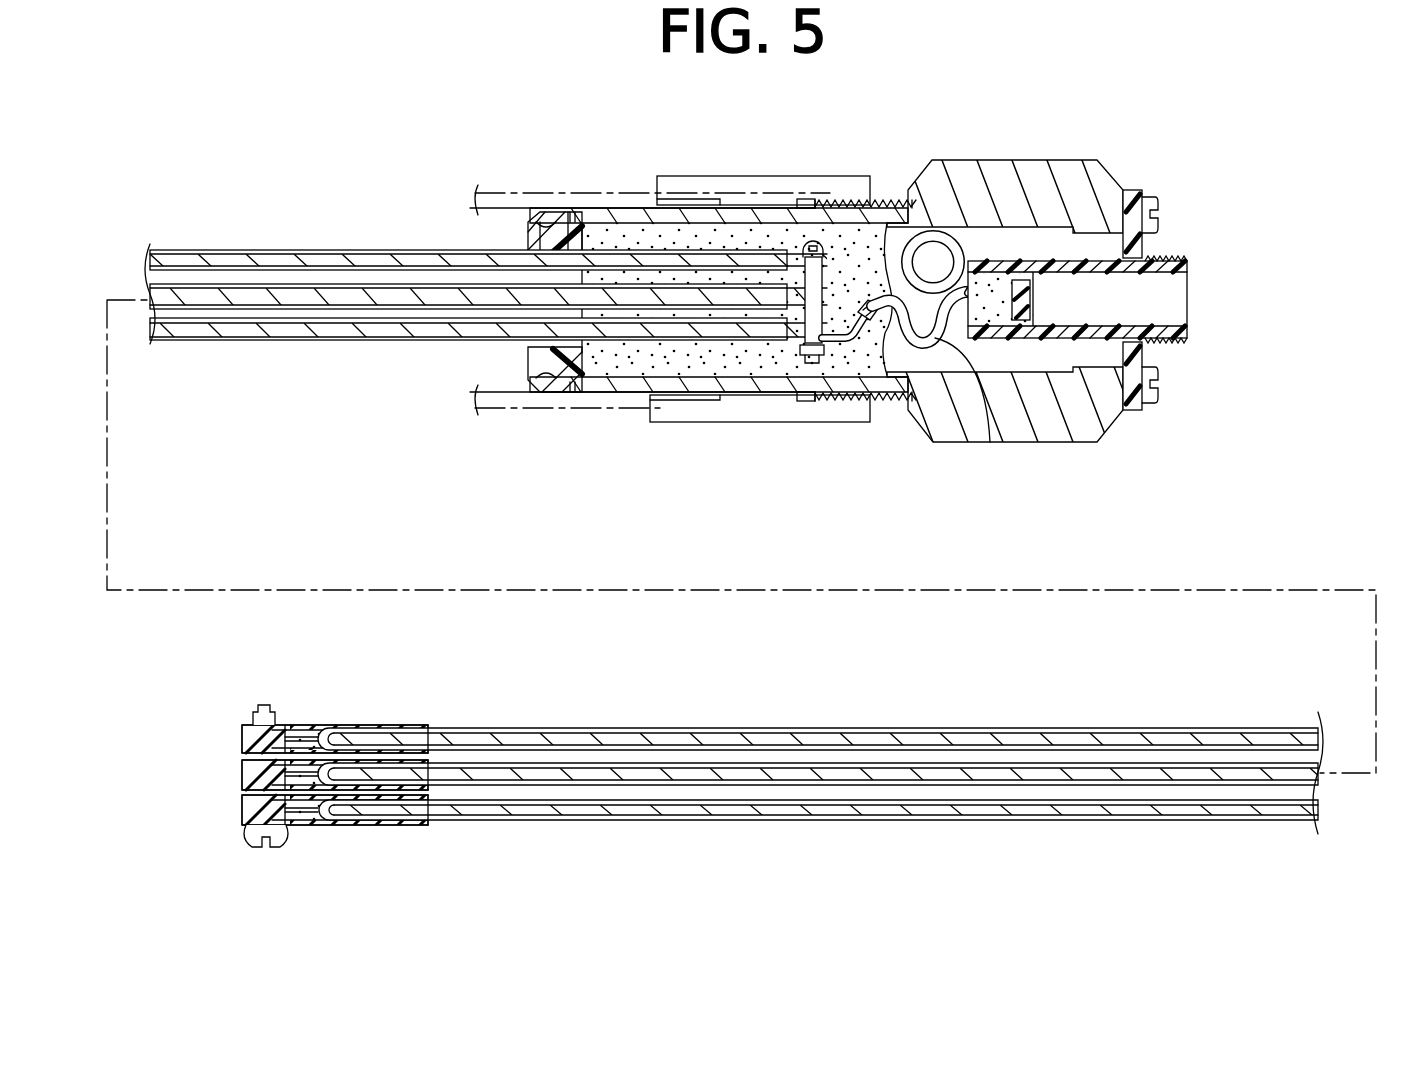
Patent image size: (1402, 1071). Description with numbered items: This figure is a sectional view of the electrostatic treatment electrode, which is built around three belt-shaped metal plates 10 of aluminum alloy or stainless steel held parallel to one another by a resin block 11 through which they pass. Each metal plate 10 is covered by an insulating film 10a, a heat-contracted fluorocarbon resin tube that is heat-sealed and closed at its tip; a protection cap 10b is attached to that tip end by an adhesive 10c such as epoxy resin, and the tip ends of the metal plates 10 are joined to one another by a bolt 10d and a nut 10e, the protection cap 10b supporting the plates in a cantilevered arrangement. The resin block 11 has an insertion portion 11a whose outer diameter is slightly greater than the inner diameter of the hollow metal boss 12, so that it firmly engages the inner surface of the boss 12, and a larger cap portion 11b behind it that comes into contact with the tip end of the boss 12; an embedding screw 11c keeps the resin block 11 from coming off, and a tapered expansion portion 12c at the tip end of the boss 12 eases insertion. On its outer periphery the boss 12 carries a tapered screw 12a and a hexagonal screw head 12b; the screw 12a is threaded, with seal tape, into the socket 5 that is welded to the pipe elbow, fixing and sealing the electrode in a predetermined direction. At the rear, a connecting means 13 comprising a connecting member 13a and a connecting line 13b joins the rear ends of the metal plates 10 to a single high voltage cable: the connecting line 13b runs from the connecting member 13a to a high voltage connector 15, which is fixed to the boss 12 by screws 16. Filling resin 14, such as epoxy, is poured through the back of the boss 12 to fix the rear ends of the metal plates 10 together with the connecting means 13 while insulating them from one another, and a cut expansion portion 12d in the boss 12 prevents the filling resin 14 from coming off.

The socket 5 is at (603, 406).
The belt-shaped metal plate 10 is at (234, 283).
The insulating film 10a is at (301, 725).
The protection cap 10b is at (378, 725).
The adhesive 10c is at (290, 826).
The bolt 10d is at (253, 830).
The nut 10e is at (252, 710).
The resin block 11 is at (578, 209).
The insertion portion 11a is at (617, 238).
The cap portion 11b is at (534, 217).
The embedding screw 11c is at (572, 225).
The metal boss 12 is at (698, 313).
The tapered screw 12a is at (878, 206).
The hexagonal screw head 12b is at (1042, 160).
The tapered expansion portion 12c is at (540, 385).
The cut expansion portion 12d is at (872, 382).
The connecting means 13 is at (943, 391).
The connecting member 13a is at (866, 328).
The connecting line 13b is at (958, 338).
The filling resin 14 is at (751, 365).
The high voltage connector 15 is at (1150, 196).
The screws 16 is at (1150, 398).